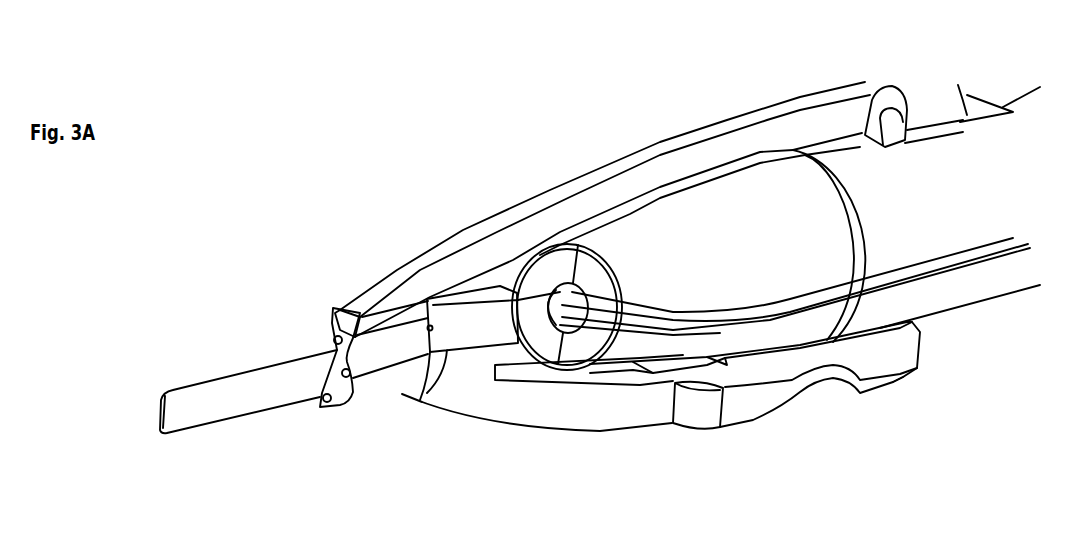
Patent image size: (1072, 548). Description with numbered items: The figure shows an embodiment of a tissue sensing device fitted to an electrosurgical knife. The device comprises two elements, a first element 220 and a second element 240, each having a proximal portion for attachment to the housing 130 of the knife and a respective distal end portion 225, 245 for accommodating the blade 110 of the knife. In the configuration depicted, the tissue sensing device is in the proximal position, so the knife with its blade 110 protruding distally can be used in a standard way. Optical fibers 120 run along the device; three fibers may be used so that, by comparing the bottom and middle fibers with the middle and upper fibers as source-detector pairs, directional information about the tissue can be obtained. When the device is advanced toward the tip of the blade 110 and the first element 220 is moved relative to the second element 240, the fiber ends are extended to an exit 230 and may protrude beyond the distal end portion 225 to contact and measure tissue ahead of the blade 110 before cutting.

The blade 110 is at (228, 393).
The optical fibers 120 is at (927, 275).
The housing 130 is at (757, 242).
The first element 220 is at (500, 247).
The distal end portion of the first element 225 is at (380, 384).
The exit 230 is at (337, 337).
The second element 240 is at (617, 410).
The distal end portion of the second element 245 is at (478, 326).